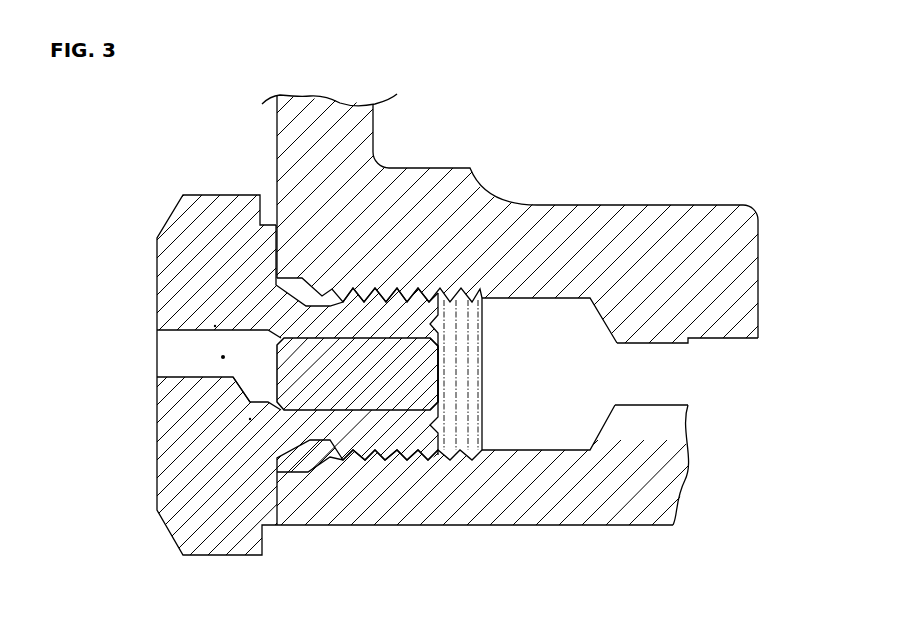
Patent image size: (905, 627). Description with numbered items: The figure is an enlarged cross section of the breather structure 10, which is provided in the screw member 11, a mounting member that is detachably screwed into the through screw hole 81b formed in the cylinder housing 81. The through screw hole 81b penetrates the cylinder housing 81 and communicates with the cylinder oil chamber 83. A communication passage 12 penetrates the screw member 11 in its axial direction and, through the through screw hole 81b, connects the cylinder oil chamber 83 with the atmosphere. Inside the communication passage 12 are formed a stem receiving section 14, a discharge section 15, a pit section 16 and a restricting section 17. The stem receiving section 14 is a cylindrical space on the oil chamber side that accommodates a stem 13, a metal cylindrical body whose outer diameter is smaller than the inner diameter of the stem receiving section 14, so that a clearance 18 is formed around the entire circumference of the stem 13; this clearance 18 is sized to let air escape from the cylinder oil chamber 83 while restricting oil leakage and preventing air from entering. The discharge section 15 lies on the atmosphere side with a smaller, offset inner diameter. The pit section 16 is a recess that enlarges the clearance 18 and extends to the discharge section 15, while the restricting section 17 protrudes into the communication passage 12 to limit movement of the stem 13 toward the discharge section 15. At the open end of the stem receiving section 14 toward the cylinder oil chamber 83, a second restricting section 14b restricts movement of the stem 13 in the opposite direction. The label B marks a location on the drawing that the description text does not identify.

The breather structure 10 is at (144, 319).
The screw member 11 is at (223, 210).
The communication passage 12 is at (183, 365).
The stem 13 is at (436, 410).
The stem receiving section 14 is at (344, 375).
The second restricting section 14b is at (433, 404).
The discharge section 15 is at (223, 358).
The pit section 16 is at (215, 325).
The restricting section 17 is at (247, 393).
The clearance 18 is at (391, 450).
The cylinder housing 81 is at (493, 197).
The through screw hole 81b is at (553, 337).
The cylinder oil chamber 83 is at (707, 377).
The point B is at (250, 420).